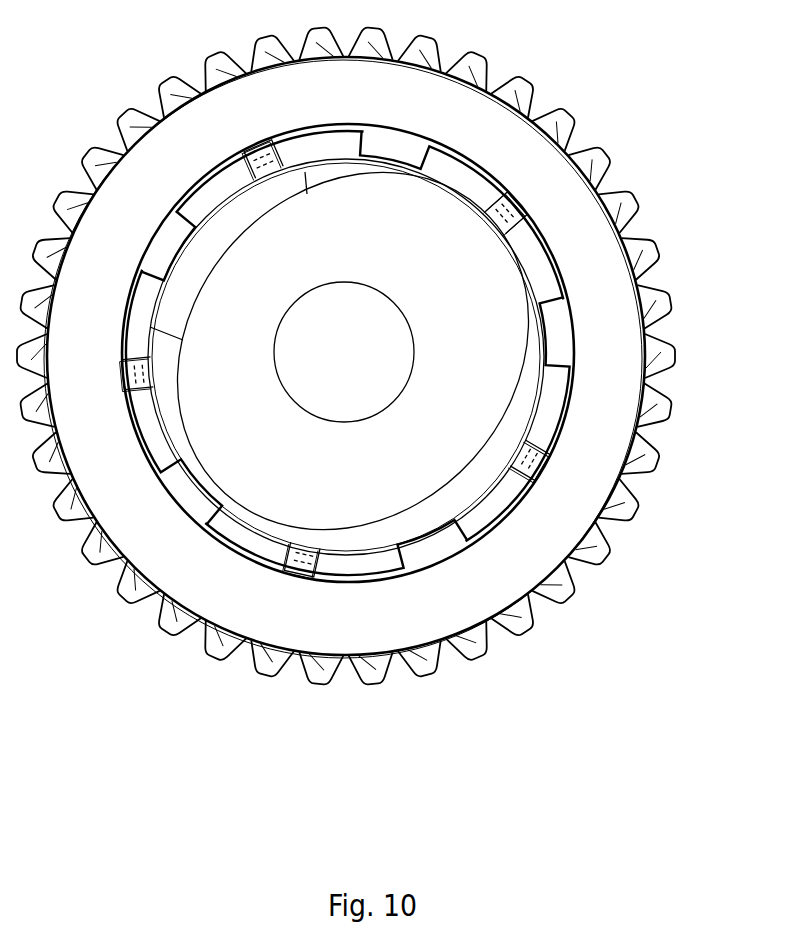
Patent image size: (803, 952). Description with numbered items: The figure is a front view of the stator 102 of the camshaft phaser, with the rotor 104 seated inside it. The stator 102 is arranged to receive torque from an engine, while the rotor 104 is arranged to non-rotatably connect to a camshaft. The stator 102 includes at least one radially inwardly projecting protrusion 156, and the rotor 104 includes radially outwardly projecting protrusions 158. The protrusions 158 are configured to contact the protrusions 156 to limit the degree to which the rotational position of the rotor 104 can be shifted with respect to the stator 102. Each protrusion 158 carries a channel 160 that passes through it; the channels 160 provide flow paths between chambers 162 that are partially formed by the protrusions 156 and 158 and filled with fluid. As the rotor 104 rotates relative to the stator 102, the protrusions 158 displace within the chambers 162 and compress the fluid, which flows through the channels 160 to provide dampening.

The stator 102 is at (684, 302).
The rotor 104 is at (457, 177).
The radially inwardly projecting protrusion 156 is at (398, 148).
The radially outwardly projecting protrusion 158 is at (521, 214).
The channel 160 is at (258, 152).
The chamber 162 is at (437, 278).